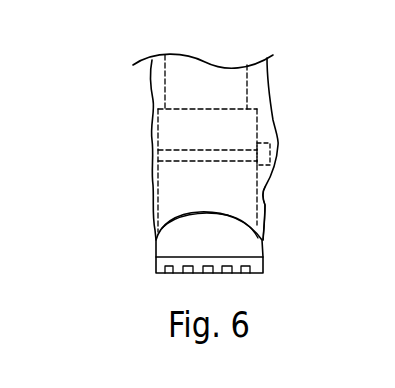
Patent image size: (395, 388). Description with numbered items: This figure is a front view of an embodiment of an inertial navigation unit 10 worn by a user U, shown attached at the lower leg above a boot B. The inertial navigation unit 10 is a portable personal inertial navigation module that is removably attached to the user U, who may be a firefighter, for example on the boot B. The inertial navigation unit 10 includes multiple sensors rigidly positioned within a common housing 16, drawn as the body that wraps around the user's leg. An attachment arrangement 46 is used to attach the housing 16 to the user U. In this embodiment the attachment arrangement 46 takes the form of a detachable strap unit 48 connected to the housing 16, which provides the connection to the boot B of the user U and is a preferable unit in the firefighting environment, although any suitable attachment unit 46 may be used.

The inertial navigation unit 10 is at (279, 144).
The housing 16 is at (266, 191).
The attachment arrangement 46 is at (235, 172).
The detachable strap unit 48 is at (215, 150).
The user U is at (131, 79).
The boot B is at (156, 246).